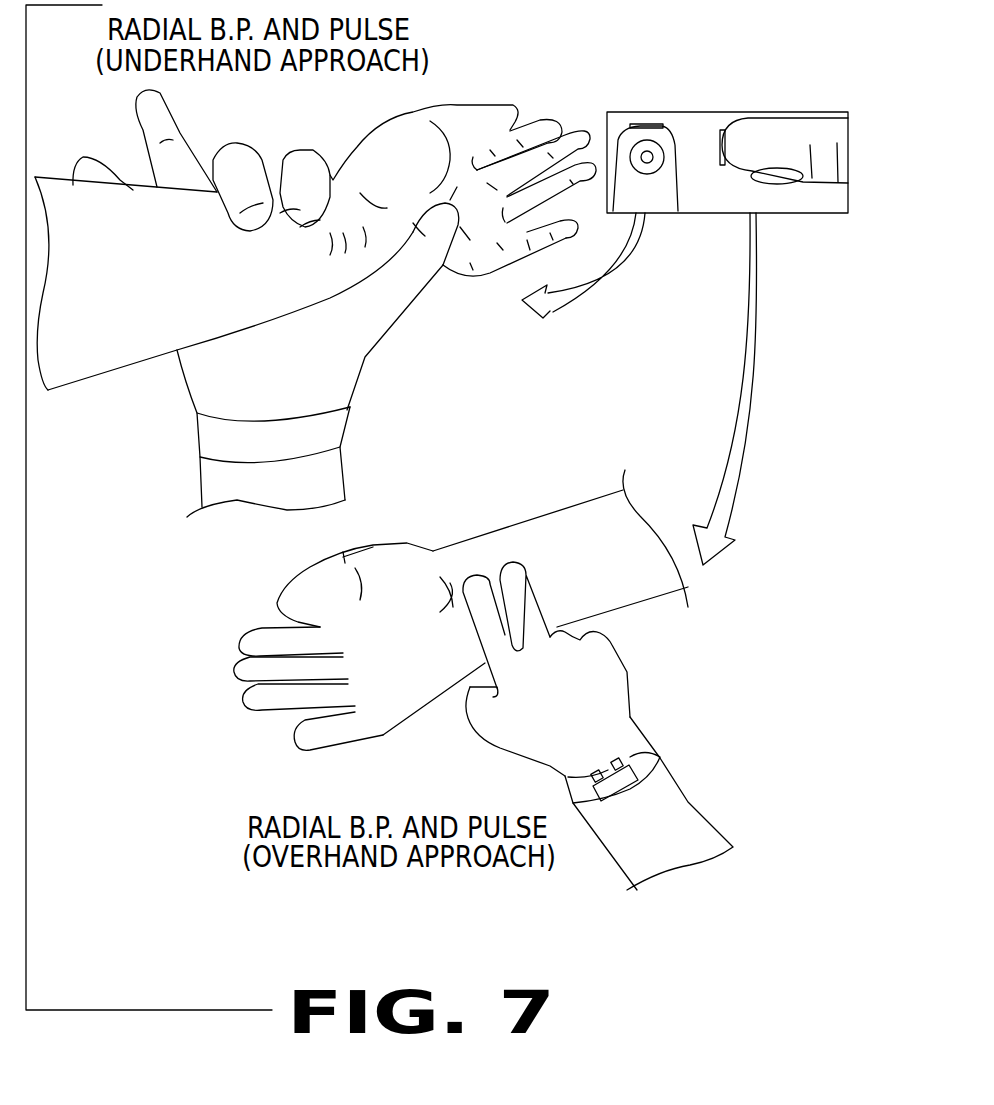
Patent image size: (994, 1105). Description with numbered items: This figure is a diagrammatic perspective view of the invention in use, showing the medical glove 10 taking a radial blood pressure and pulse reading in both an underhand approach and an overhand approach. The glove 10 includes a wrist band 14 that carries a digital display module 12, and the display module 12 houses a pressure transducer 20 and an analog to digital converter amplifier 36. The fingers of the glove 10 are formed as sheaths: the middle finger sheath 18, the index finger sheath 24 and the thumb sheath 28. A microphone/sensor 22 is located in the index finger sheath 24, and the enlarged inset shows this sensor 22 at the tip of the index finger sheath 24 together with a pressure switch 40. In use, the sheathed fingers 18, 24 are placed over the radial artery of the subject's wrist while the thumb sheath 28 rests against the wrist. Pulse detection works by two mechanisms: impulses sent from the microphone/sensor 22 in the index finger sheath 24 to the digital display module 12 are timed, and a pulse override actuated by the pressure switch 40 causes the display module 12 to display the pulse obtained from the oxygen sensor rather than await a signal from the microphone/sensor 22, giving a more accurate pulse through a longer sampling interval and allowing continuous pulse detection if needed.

The medical glove 10 is at (365, 357).
The digital display module 12 is at (627, 783).
The wrist band 14 is at (217, 433).
The middle finger sheath 18 is at (243, 177).
The pressure transducer 20 is at (617, 760).
The microphone/sensor 22 is at (657, 168).
The index finger sheath 24 is at (308, 163).
The thumb sheath 28 is at (423, 300).
The analog to digital converter amplifier 36 is at (576, 757).
The pressure switch 40 is at (636, 125).